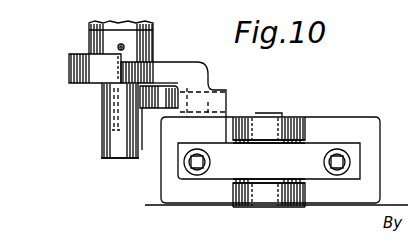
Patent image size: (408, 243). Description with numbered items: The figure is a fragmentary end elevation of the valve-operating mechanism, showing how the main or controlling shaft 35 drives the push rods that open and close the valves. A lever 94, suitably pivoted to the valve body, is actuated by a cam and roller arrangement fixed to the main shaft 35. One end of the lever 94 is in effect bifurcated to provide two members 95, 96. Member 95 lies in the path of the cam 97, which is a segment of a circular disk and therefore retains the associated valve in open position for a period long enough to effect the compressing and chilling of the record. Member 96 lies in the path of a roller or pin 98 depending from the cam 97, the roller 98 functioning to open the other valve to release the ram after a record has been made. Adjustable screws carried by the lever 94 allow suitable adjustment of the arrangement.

The lever 94 is at (270, 160).
The member 95 is at (146, 74).
The member 96 is at (153, 108).
The cam 97 is at (68, 79).
The roller or pin 98 is at (113, 119).
The main or controlling shaft 35 is at (104, 146).